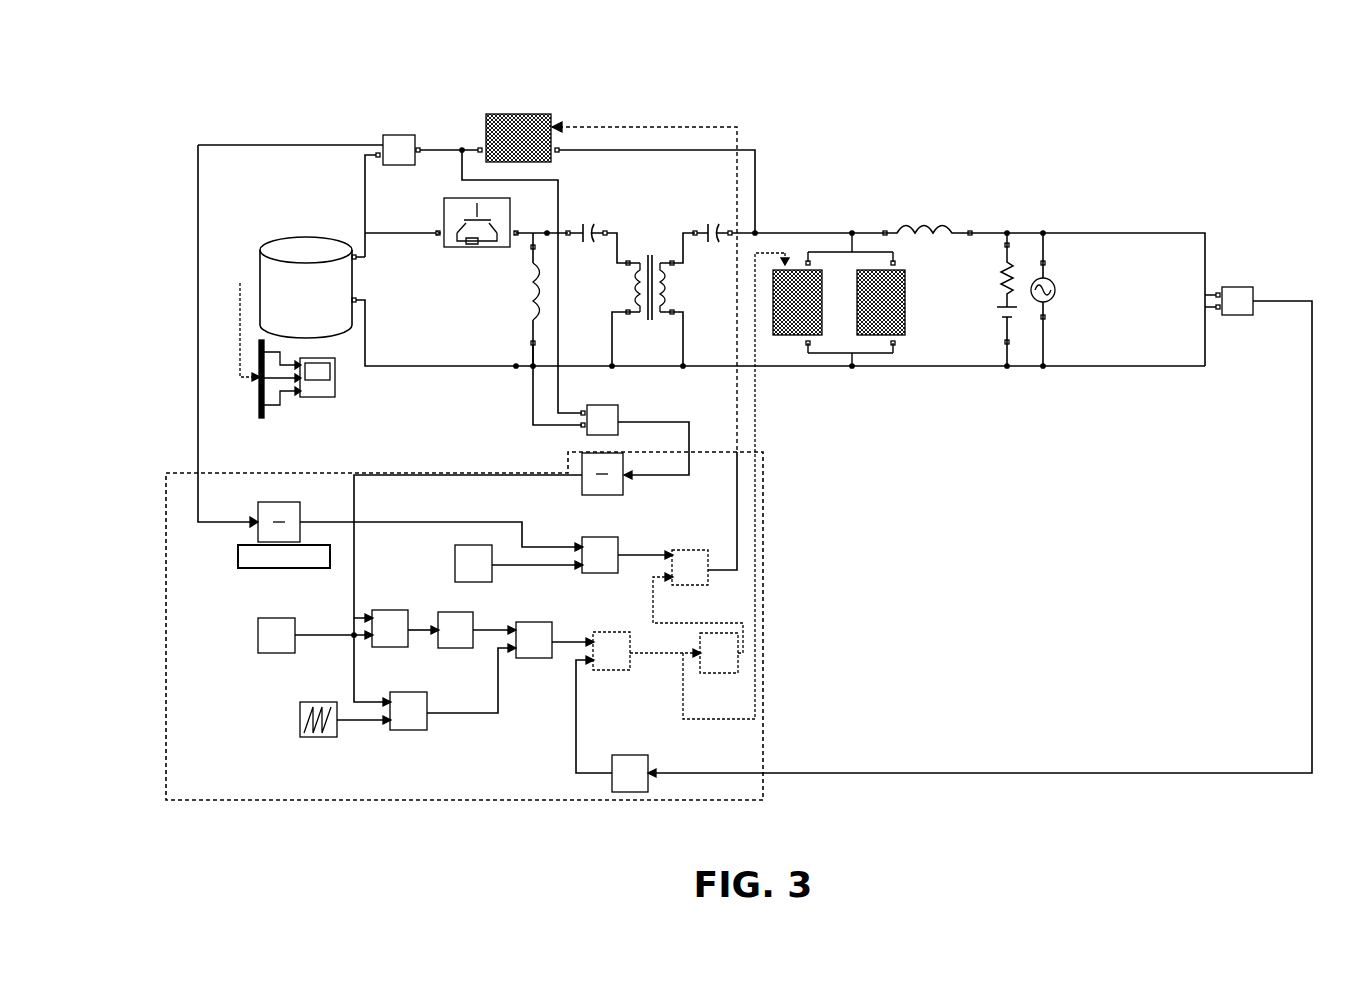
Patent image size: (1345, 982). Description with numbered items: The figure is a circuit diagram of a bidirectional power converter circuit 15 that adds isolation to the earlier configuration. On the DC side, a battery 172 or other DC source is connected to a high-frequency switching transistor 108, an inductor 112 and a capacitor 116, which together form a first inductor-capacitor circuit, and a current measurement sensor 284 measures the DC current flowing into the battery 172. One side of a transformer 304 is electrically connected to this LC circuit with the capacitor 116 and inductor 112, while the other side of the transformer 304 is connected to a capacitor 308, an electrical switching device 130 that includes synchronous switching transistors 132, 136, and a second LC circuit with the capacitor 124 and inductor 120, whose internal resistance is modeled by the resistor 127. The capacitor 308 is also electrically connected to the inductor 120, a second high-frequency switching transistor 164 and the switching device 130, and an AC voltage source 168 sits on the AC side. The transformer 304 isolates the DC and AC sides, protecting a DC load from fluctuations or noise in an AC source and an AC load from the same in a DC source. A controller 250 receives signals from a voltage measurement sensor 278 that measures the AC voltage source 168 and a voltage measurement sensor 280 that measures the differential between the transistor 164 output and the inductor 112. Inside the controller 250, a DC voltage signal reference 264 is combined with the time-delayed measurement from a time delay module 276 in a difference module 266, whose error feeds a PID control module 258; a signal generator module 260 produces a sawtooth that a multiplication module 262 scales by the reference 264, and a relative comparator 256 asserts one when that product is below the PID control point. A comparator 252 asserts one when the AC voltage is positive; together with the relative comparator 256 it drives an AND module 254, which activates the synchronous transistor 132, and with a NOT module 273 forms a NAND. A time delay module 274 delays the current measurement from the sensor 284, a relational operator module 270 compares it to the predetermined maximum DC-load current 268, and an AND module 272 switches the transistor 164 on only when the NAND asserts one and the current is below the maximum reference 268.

The power converter circuit 15 is at (142, 103).
The high-frequency switching transistor 108 is at (444, 199).
The inductor 112 is at (528, 320).
The capacitor 116 is at (590, 230).
The inductor 120 is at (942, 225).
The capacitor 124 is at (1000, 325).
The resistor 127 is at (1012, 262).
The electrical switching device 130 is at (925, 320).
The synchronous switching transistor 132 is at (806, 338).
The synchronous switching transistor 136 is at (906, 290).
The high-frequency switching transistor 164 is at (555, 122).
The AC voltage source 168 is at (1055, 298).
The battery 172 is at (290, 240).
The controller 250 is at (360, 802).
The comparator 252 is at (648, 782).
The AND module 254 is at (597, 632).
The relative comparator 256 is at (545, 621).
The PID control module 258 is at (473, 620).
The signal generator module 260 is at (315, 700).
The multiplication module 262 is at (400, 695).
The DC voltage signal reference 264 is at (265, 616).
The difference module 266 is at (388, 610).
The predetermined maximum DC-load current 268 is at (455, 556).
The relational operator module 270 is at (597, 545).
The AND module 272 is at (680, 550).
The NOT module 273 is at (700, 650).
The time delay module 274 is at (265, 507).
The time delay module 276 is at (622, 497).
The voltage measurement sensor 278 is at (1230, 284).
The voltage measurement sensor 280 is at (603, 406).
The current measurement sensor 284 is at (378, 152).
The transformer 304 is at (643, 218).
The capacitor 308 is at (712, 245).